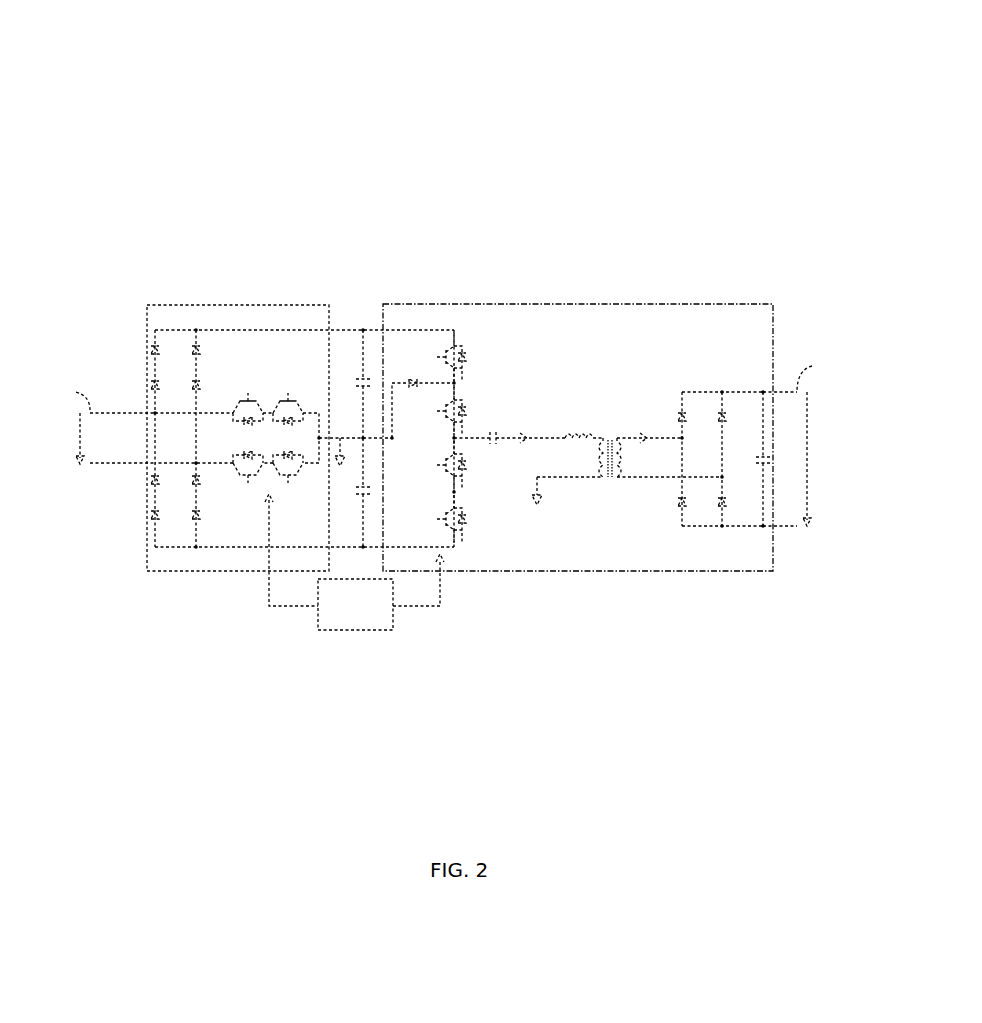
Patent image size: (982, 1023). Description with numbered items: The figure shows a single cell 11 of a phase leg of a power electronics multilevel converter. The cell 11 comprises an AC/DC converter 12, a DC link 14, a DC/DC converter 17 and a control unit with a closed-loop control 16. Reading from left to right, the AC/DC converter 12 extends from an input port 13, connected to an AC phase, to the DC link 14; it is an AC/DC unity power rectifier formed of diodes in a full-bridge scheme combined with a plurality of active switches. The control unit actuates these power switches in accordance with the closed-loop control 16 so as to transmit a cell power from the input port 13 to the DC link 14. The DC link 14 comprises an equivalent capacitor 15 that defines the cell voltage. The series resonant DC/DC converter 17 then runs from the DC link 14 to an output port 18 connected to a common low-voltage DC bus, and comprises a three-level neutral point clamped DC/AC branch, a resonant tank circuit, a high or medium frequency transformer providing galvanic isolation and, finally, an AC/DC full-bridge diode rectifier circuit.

The cell 11 is at (456, 66).
The AC/DC converter 12 is at (297, 304).
The input port 13 is at (111, 303).
The DC link 14 is at (357, 303).
The equivalent capacitor 15 is at (355, 438).
The closed-loop control 16 is at (355, 617).
The DC/DC converter 17 is at (741, 304).
The output port 18 is at (792, 301).